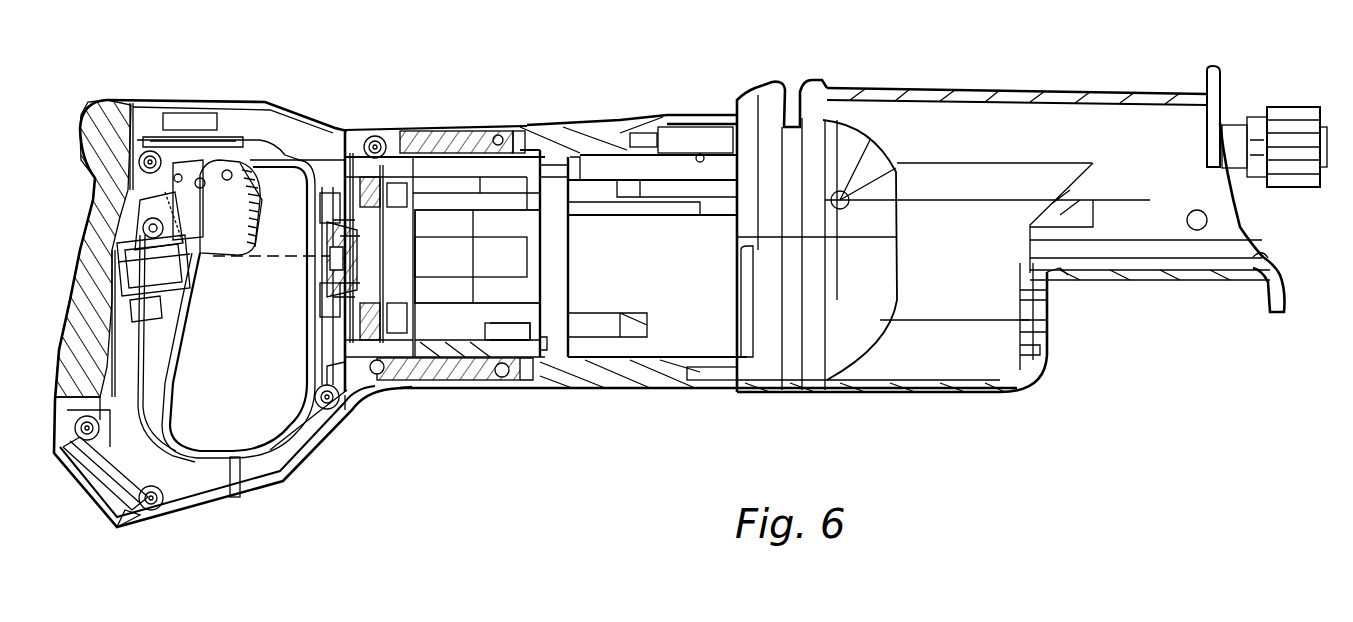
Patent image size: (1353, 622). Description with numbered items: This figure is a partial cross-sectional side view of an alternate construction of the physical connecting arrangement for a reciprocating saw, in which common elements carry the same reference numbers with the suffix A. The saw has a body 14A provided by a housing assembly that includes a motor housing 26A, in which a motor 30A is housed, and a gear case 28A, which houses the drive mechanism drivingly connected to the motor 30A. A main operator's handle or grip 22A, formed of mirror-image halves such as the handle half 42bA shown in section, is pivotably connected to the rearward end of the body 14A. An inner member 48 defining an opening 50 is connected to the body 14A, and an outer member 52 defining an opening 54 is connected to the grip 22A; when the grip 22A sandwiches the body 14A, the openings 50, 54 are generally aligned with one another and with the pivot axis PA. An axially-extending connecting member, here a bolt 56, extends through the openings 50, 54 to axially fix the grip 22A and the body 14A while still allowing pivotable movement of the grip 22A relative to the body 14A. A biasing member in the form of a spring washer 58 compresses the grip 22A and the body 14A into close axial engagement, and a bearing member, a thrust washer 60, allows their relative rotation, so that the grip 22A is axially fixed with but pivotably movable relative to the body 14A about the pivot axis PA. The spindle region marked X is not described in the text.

The grip 22A is at (171, 97).
The handle half 42bA is at (277, 467).
The pivot axis PA is at (286, 262).
The bolt 56 is at (371, 375).
The inner member 48 is at (410, 136).
The spring washer 58 is at (347, 195).
The outer member 52 is at (473, 140).
The thrust washer 60 is at (417, 388).
The opening 50 is at (406, 236).
The opening 54 is at (400, 258).
The motor 30A is at (519, 308).
The motor housing 26A is at (560, 137).
The body 14A is at (713, 70).
The gear case 28A is at (863, 91).
The spindle X is at (1290, 107).